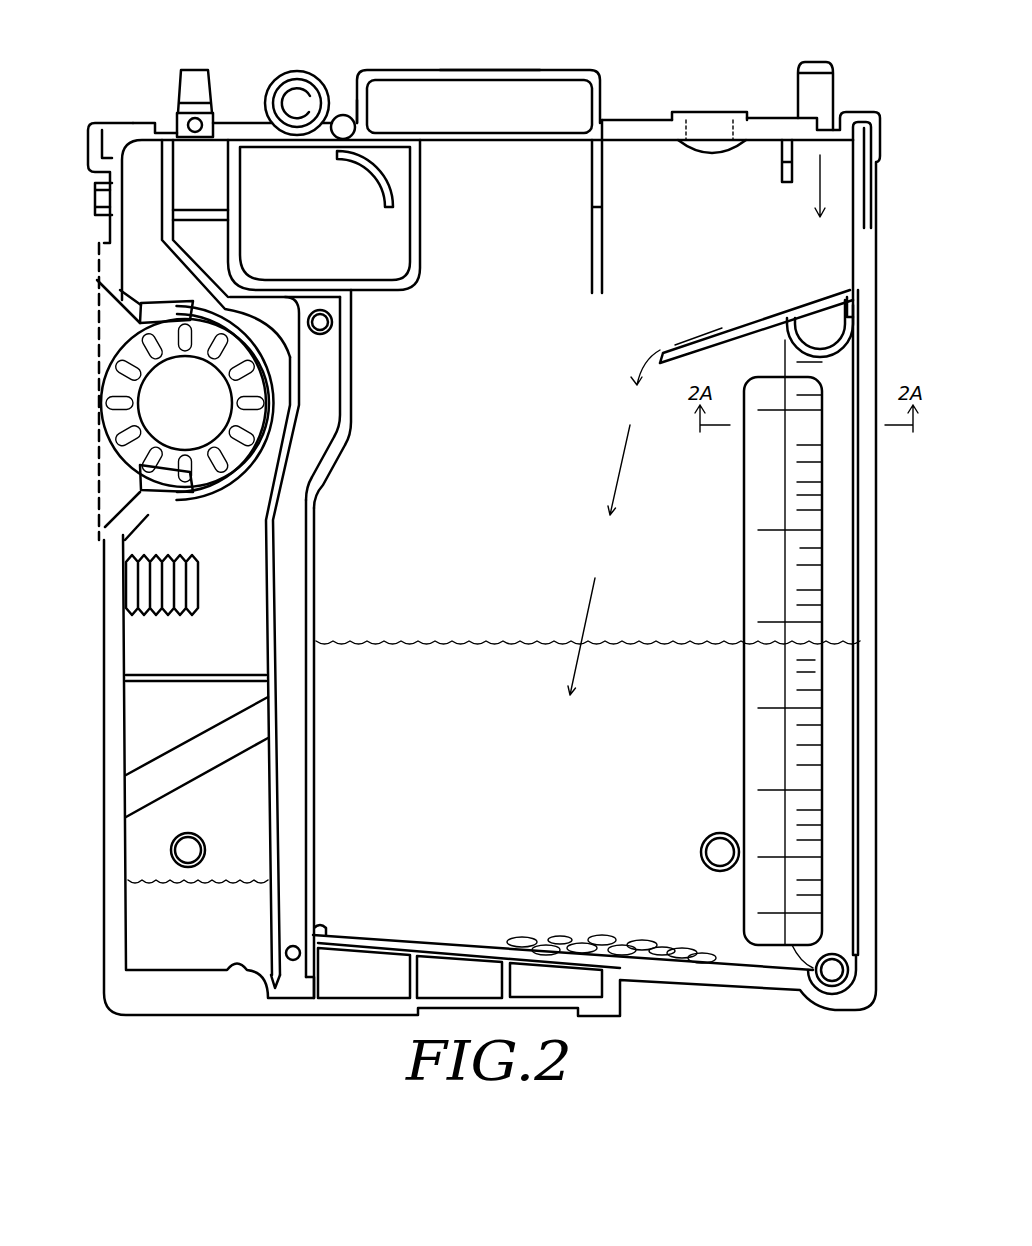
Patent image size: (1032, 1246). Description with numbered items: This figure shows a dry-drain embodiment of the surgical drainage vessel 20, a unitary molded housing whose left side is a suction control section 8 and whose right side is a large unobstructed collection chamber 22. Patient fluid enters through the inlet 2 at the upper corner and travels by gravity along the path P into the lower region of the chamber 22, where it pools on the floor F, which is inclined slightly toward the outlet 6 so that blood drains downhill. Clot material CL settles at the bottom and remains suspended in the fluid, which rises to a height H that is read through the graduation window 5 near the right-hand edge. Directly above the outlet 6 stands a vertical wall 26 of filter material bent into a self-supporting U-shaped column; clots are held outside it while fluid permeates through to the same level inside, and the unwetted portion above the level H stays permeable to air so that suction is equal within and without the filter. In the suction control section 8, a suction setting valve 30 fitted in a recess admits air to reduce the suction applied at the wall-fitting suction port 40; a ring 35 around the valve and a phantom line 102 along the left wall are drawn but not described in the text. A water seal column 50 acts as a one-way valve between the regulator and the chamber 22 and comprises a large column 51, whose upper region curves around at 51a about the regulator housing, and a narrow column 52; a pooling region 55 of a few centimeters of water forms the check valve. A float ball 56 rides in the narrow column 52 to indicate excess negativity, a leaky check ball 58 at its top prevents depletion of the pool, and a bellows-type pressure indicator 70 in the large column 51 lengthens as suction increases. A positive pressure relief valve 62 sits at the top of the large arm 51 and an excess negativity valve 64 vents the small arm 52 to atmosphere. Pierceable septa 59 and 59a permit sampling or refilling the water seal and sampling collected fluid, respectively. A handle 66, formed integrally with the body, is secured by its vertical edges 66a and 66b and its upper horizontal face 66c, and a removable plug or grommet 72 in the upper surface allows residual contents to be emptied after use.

The vessel 20 is at (670, 60).
The patient fluid inlet 2 is at (800, 88).
The wall-fitting suction port 40 is at (212, 78).
The positive pressure relief valve 62 is at (178, 116).
The excess negativity valve 64 is at (300, 103).
The handle 66 is at (506, 161).
The vertical edge of handle 66a is at (372, 88).
The vertical edge of handle 66b is at (603, 78).
The upper horizontally-oriented face of handle 66c is at (488, 70).
The removable plug or grommet 72 is at (697, 110).
The curved upper region of large column 51a is at (223, 283).
The check ball 58 is at (332, 318).
The suction control section 8 is at (367, 350).
The suction setting valve 30 is at (253, 418).
The ring 35 is at (273, 450).
The large column 51 is at (257, 770).
The narrow column 52 is at (292, 770).
The water seal column 50 is at (287, 798).
The bellows-type pressure indicator 70 is at (188, 560).
The phantom wall 102 is at (102, 588).
The pooling region 55 is at (241, 883).
The pierceable septum 59 is at (188, 846).
The pierceable septum 59a is at (717, 845).
The float ball 56 is at (287, 947).
The floor F is at (385, 937).
The clot material CL is at (610, 933).
The outlet 6 is at (783, 957).
The vertical wall of filter material 26 is at (787, 357).
The graduation window 5 is at (758, 525).
The height of clots and fluid H is at (570, 640).
The inlet flow path P is at (818, 192).
The collection chamber 22 is at (553, 391).